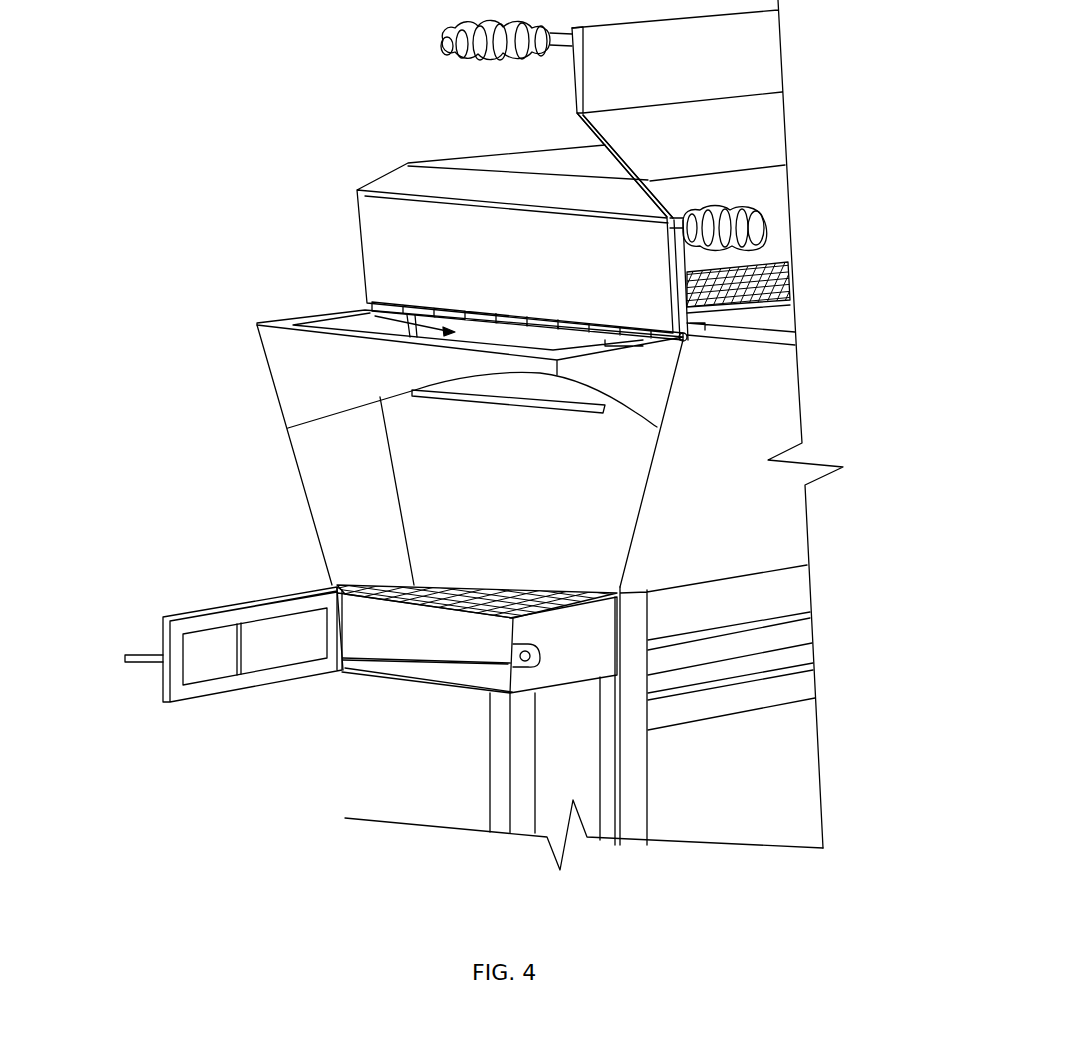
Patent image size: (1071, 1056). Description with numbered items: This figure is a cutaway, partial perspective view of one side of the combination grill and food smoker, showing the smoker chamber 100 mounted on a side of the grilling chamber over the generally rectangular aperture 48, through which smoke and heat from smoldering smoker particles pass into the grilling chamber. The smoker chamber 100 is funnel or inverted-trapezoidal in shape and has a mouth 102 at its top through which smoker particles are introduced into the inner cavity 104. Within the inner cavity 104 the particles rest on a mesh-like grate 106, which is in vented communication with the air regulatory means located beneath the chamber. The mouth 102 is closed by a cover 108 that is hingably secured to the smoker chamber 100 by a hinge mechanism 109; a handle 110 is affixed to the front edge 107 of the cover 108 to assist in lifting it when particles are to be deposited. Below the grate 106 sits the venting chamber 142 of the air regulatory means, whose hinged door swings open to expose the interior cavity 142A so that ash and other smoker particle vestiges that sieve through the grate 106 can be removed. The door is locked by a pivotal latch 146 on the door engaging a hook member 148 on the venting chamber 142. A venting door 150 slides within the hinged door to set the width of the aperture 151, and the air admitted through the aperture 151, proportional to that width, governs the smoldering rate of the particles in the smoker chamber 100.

The aperture 48 is at (363, 309).
The smoker chamber 100 is at (260, 350).
The mouth 102 is at (563, 343).
The inner cavity 104 is at (326, 316).
The mesh-like grate 106 is at (393, 578).
The front edge 107 is at (613, 212).
The cover 108 is at (376, 225).
The hinge mechanism 109 is at (503, 312).
The handle 110 is at (757, 222).
The venting chamber 142 is at (566, 666).
The interior cavity 142A is at (428, 646).
The pivotal latch 146 is at (126, 660).
The hook member 148 is at (525, 668).
The venting door 150 is at (262, 655).
The aperture 151 is at (209, 665).